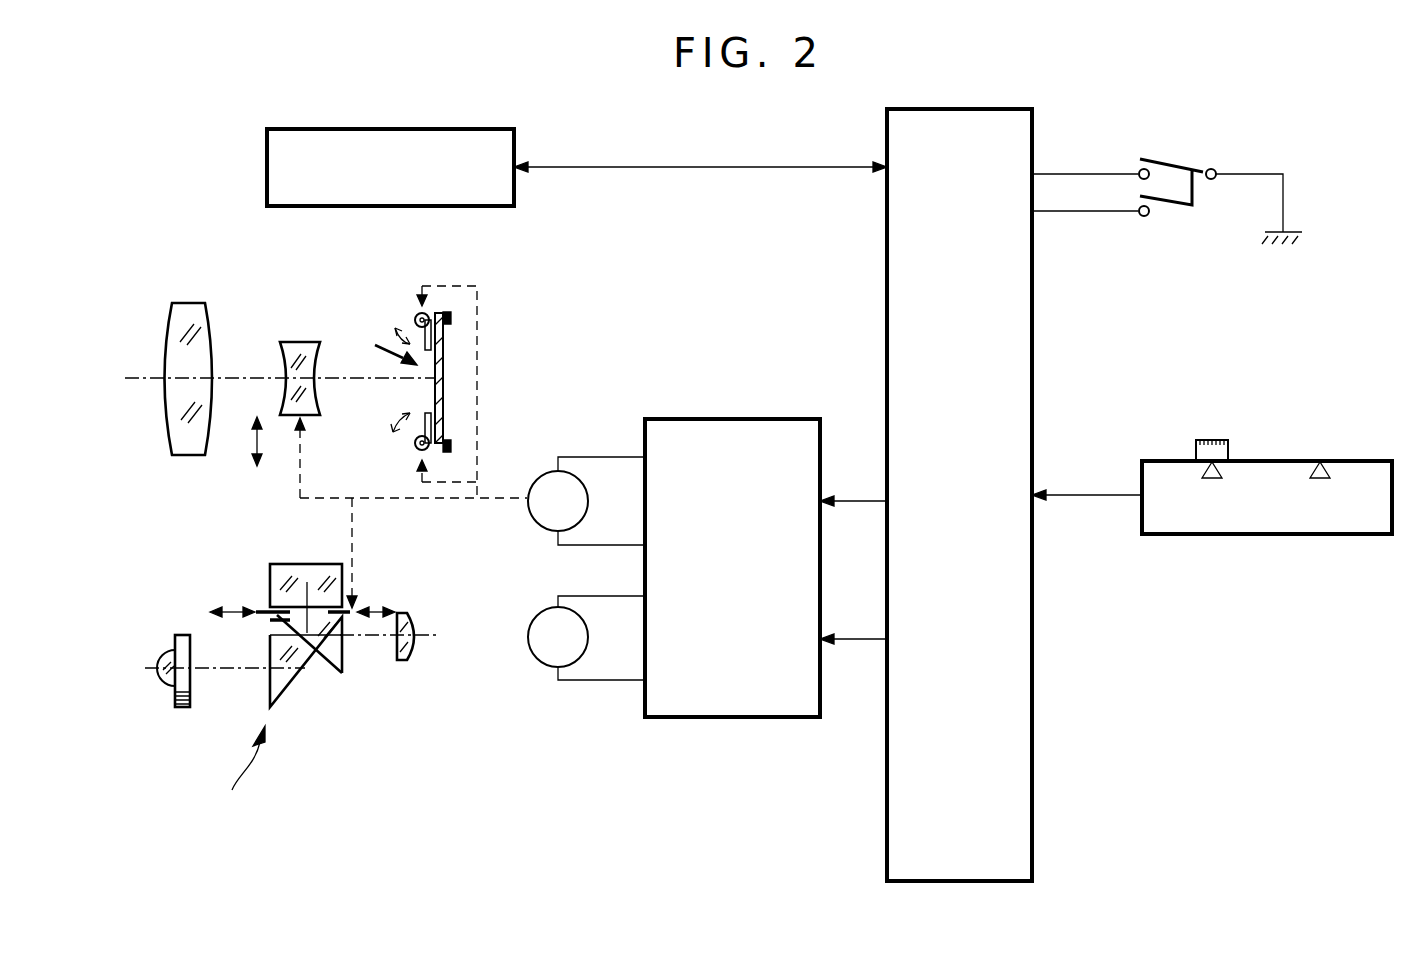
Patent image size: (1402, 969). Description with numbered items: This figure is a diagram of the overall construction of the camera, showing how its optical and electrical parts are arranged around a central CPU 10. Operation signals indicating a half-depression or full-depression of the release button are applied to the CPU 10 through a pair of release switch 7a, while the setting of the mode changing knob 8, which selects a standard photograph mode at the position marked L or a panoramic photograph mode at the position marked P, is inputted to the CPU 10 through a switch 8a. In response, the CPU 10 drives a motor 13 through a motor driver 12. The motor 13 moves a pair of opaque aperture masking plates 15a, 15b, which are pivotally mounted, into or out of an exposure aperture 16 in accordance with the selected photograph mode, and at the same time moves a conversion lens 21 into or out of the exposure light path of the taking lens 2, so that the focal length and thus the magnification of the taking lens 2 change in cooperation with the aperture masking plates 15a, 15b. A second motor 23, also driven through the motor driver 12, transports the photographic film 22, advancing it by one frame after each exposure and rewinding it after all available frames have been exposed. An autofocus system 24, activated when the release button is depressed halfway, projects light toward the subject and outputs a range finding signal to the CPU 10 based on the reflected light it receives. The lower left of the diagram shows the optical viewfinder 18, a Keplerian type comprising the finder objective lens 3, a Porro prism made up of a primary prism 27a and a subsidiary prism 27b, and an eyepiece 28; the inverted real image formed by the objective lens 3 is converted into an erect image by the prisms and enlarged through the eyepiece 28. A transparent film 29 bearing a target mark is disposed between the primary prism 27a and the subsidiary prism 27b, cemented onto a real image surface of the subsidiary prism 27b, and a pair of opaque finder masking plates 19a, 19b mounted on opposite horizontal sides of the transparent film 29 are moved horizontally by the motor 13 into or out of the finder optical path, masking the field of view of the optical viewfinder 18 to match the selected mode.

The taking lens 2 is at (186, 303).
The conversion lens 21 is at (300, 342).
The photographic film 22 is at (443, 365).
The aperture masking plate 15a is at (415, 322).
The aperture masking plate 15b is at (415, 443).
The exposure aperture 16 is at (373, 342).
The autofocus system 24 is at (267, 168).
The CPU 10 is at (1032, 732).
The release switch 7a is at (1172, 160).
The motor driver 12 is at (730, 419).
The motor 13 is at (545, 473).
The motor 23 is at (545, 665).
The mode changing knob 8 is at (1212, 440).
The switch 8a is at (1270, 534).
The primary prism 27a is at (285, 564).
The subsidiary prism 27b is at (290, 685).
The finder masking plate 19a is at (265, 610).
The finder masking plate 19b is at (355, 610).
The transparent film 29 is at (275, 622).
The eyepiece 28 is at (405, 662).
The finder objective lens 3 is at (183, 707).
The optical viewfinder 18 is at (250, 777).